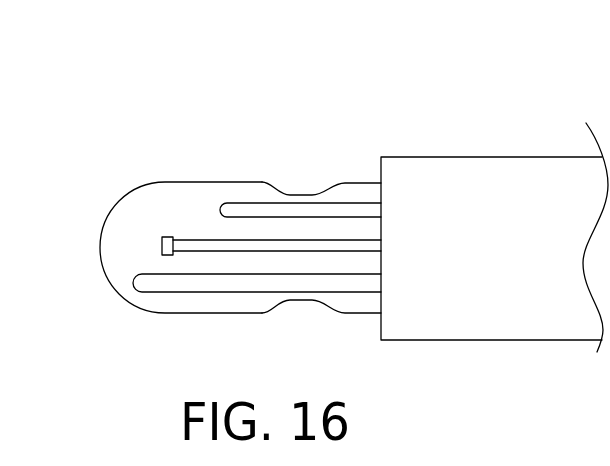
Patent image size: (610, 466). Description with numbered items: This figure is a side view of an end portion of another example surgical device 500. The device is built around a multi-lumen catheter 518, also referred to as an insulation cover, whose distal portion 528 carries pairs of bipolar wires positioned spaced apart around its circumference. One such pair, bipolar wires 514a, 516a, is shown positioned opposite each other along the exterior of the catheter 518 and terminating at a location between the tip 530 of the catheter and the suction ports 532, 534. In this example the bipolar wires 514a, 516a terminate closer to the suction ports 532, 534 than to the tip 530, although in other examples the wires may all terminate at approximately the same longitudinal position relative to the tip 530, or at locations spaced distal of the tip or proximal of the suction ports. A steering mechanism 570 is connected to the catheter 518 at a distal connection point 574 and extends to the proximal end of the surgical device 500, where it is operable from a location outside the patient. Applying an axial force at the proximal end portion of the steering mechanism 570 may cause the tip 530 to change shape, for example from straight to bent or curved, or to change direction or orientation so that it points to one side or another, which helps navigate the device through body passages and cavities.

The surgical device 500 is at (482, 128).
The multi-lumen catheter 518 is at (522, 157).
The distal portion 528 is at (103, 105).
The tip 530 is at (121, 204).
The suction port 532 is at (287, 193).
The suction port 534 is at (287, 301).
The bipolar wire 514a is at (346, 209).
The bipolar wire 516a is at (343, 285).
The steering mechanism 570 is at (183, 238).
The distal connection point 574 is at (162, 247).